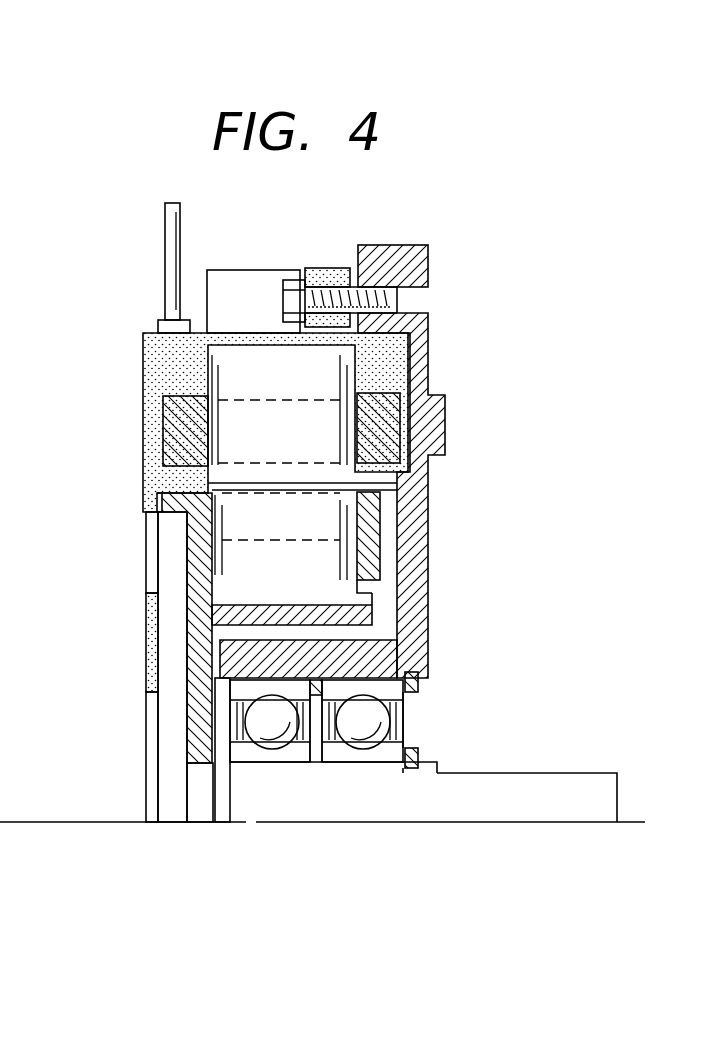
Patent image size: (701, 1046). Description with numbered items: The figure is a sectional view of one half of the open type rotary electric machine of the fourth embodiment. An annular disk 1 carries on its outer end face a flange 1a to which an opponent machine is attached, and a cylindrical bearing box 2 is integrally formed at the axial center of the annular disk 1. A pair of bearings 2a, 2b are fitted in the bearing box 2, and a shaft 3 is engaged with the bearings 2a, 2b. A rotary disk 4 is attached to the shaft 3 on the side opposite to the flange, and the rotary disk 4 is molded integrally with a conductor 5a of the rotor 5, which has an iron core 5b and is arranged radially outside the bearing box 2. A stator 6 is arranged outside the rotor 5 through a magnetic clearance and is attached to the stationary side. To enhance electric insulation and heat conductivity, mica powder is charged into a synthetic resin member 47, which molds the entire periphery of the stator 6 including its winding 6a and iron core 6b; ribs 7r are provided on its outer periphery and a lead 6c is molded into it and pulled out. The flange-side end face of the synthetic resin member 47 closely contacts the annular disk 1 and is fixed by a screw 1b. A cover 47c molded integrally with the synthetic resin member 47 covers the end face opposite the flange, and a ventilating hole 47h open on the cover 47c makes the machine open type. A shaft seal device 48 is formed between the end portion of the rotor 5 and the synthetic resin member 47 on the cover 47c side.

The annular disk 1 is at (422, 517).
The flange 1a is at (422, 338).
The screw 1b is at (300, 305).
The bearing box 2 is at (380, 648).
The bearing 2a is at (360, 745).
The bearing 2b is at (265, 745).
The shaft 3 is at (520, 785).
The rotary disk 4 is at (197, 668).
The rotor 5 is at (528, 528).
The conductor 5a is at (372, 548).
The iron core 5b is at (337, 595).
The stator 6 is at (528, 340).
The winding 6a is at (385, 427).
The iron core 6b is at (330, 372).
The lead 6c is at (165, 247).
The ribs 7r is at (243, 297).
The synthetic resin member 47 is at (150, 362).
The cover 47c is at (150, 635).
The ventilating hole 47h is at (150, 552).
The shaft seal device 48 is at (165, 487).